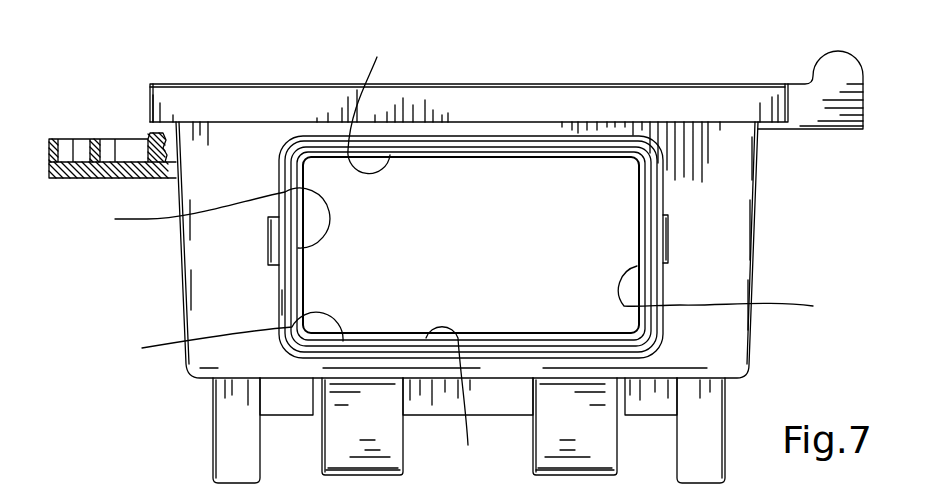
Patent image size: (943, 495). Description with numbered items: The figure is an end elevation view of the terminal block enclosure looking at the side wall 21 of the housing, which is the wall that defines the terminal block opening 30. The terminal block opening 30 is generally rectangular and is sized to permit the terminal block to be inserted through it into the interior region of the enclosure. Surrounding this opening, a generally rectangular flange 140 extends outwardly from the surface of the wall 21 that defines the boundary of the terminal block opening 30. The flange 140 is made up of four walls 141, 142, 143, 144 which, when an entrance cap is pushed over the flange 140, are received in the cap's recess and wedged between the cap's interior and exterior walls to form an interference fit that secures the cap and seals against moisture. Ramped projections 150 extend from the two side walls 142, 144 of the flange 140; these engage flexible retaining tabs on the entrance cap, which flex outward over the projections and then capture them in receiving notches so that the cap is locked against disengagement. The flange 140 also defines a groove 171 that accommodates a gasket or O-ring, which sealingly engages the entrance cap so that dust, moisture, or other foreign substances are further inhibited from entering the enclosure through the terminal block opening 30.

The side wall 21 is at (723, 256).
The terminal block opening 30 is at (226, 336).
The flange 140 is at (288, 206).
The wall 141 is at (459, 398).
The wall 142 is at (202, 218).
The wall 143 is at (377, 102).
The wall 144 is at (736, 294).
The ramped projections 150 is at (275, 238).
The groove 171 is at (288, 302).